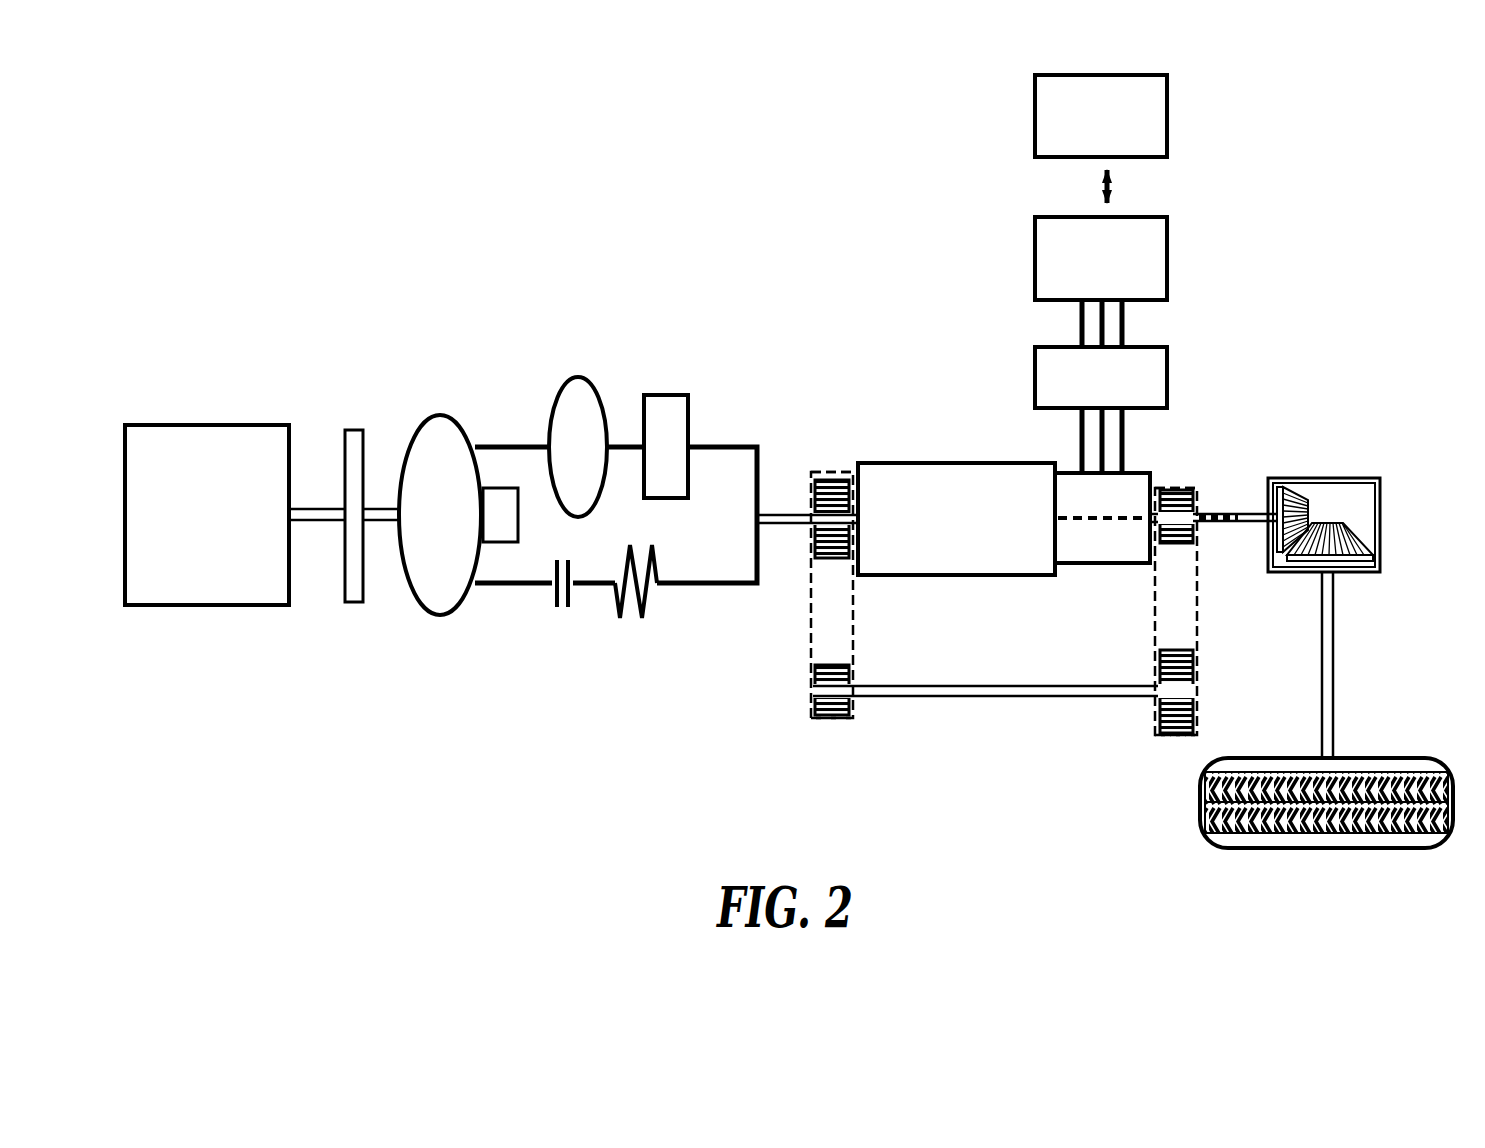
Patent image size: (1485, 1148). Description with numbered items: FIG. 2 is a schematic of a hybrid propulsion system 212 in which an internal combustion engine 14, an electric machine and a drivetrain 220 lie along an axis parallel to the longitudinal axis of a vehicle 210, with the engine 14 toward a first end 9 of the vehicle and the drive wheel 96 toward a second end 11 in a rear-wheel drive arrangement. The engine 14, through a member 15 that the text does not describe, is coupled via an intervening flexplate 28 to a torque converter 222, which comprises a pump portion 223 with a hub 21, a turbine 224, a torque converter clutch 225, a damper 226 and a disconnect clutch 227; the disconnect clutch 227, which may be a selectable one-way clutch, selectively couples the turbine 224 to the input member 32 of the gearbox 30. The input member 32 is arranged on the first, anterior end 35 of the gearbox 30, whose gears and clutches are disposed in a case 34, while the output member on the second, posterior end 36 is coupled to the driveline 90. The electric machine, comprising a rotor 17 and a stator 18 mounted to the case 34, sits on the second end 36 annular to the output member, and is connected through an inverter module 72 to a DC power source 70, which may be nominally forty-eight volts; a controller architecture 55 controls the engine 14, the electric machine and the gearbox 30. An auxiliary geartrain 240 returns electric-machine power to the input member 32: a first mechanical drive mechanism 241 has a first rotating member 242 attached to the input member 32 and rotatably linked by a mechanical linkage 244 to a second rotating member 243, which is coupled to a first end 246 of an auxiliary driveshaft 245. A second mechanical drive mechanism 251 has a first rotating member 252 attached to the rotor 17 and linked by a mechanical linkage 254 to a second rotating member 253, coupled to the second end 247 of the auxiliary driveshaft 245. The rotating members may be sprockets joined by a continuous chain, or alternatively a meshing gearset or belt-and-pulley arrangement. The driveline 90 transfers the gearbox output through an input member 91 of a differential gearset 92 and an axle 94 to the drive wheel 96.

The first end 9 is at (251, 437).
The second end 11 is at (1262, 330).
The internal combustion engine 14 is at (120, 288).
The engine crankshaft 15 is at (325, 505).
The rotor 17 is at (1235, 518).
The stator 18 is at (1152, 480).
The hub 21 is at (815, 478).
The flexplate 28 is at (355, 430).
The gearbox 30 is at (935, 472).
The input member 32 is at (790, 512).
The case 34 is at (948, 463).
The first end 35 is at (858, 462).
The second end 36 is at (1052, 462).
The controller architecture 55 is at (1101, 139).
The DC power source 70 is at (1101, 282).
The inverter module 72 is at (1101, 410).
The driveline 90 is at (1383, 525).
The input member 91 is at (1225, 525).
The differential gearset 92 is at (1327, 520).
The axle 94 is at (1333, 633).
The drive wheel 96 is at (1205, 835).
The vehicle 210 is at (598, 295).
The hybrid propulsion system 212 is at (413, 343).
The drivetrain 220 is at (622, 415).
The torque converter 222 is at (517, 422).
The pump portion 223 is at (458, 515).
The turbine 224 is at (578, 447).
The torque converter clutch 225 is at (557, 597).
The damper 226 is at (632, 597).
The disconnect clutch 227 is at (688, 418).
The auxiliary geartrain 240 is at (1007, 757).
The first mechanical drive mechanism 241 is at (807, 653).
The first rotating member 242 is at (808, 535).
The second rotating member 243 is at (813, 690).
The mechanical linkage 244 is at (811, 618).
The auxiliary driveshaft 245 is at (995, 697).
The first end 246 is at (833, 735).
The second end 247 is at (1158, 735).
The second mechanical drive mechanism 251 is at (1200, 643).
The first rotating member 252 is at (1177, 545).
The second rotating member 253 is at (1195, 700).
The mechanical linkage 254 is at (1197, 610).